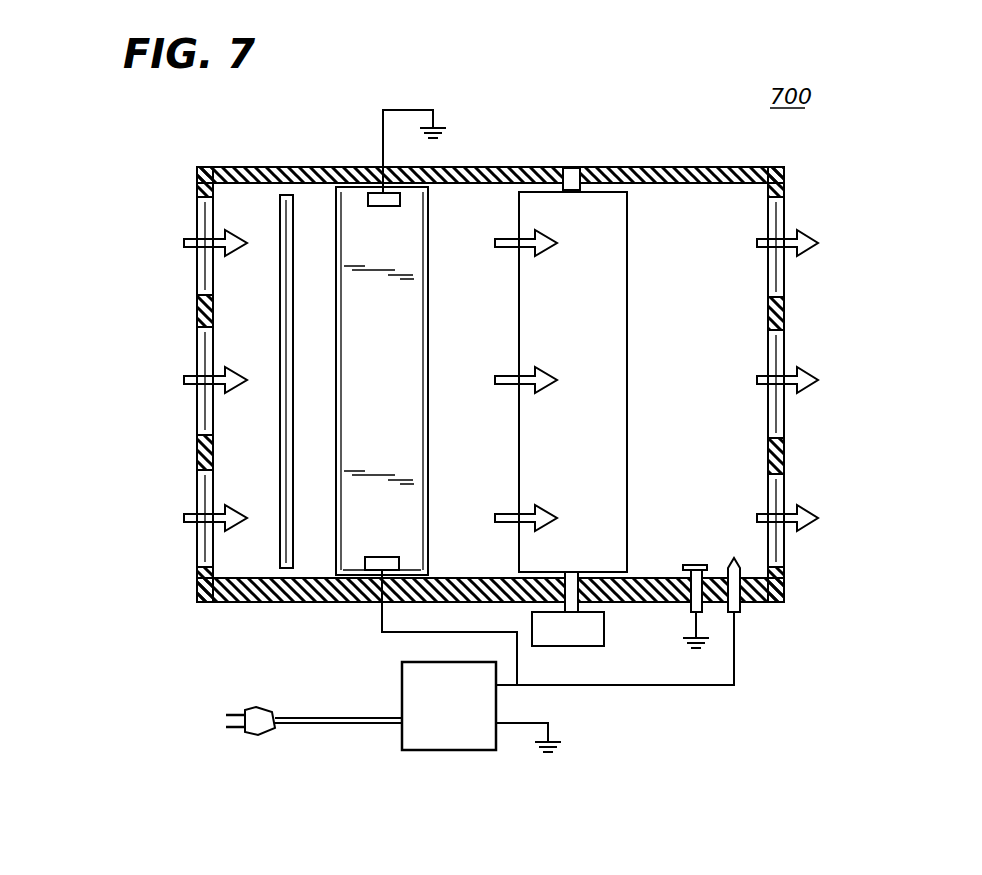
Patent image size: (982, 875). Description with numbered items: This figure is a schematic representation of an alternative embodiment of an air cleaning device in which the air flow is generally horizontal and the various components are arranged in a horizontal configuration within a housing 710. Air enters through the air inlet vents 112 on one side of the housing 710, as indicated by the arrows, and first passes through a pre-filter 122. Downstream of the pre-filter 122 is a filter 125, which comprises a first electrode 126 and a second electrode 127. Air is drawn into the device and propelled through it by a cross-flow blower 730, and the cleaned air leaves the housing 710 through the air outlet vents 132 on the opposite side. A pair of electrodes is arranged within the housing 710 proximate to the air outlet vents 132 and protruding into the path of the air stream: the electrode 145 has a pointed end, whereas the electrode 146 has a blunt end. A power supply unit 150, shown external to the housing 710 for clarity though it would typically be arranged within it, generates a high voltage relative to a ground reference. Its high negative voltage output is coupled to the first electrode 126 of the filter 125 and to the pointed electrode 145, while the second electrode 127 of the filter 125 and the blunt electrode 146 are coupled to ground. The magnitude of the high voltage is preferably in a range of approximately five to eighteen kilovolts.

The housing 710 is at (668, 167).
The air inlet vents 112 is at (197, 218).
The air outlet vents 132 is at (785, 210).
The pre-filter 122 is at (280, 228).
The filter 125 is at (418, 342).
The second electrode 127 is at (372, 193).
The first electrode 126 is at (370, 565).
The cross-flow blower 730 is at (552, 205).
The blunt electrode 146 is at (690, 565).
The pointed electrode 145 is at (734, 558).
The power supply unit 150 is at (402, 698).